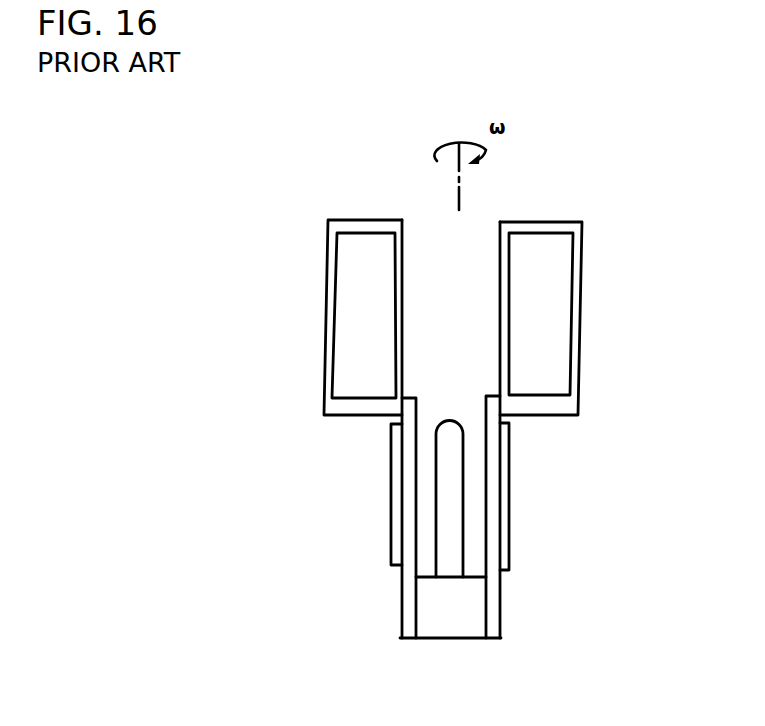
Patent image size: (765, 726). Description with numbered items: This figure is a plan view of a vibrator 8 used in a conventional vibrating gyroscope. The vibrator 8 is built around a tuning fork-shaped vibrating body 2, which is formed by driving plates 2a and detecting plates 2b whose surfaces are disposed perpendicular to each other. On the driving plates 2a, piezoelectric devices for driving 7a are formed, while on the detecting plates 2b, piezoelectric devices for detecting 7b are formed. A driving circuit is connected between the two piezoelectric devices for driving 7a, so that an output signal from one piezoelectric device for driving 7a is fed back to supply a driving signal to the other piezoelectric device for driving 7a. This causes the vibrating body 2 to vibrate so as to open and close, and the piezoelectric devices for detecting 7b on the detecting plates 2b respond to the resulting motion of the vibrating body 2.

The vibrating body 2 is at (594, 218).
The driving plates 2a is at (408, 590).
The detecting plates 2b is at (334, 406).
The piezoelectric devices for driving 7a is at (399, 479).
The piezoelectric devices for detecting 7b is at (348, 302).
The vibrator 8 is at (216, 192).